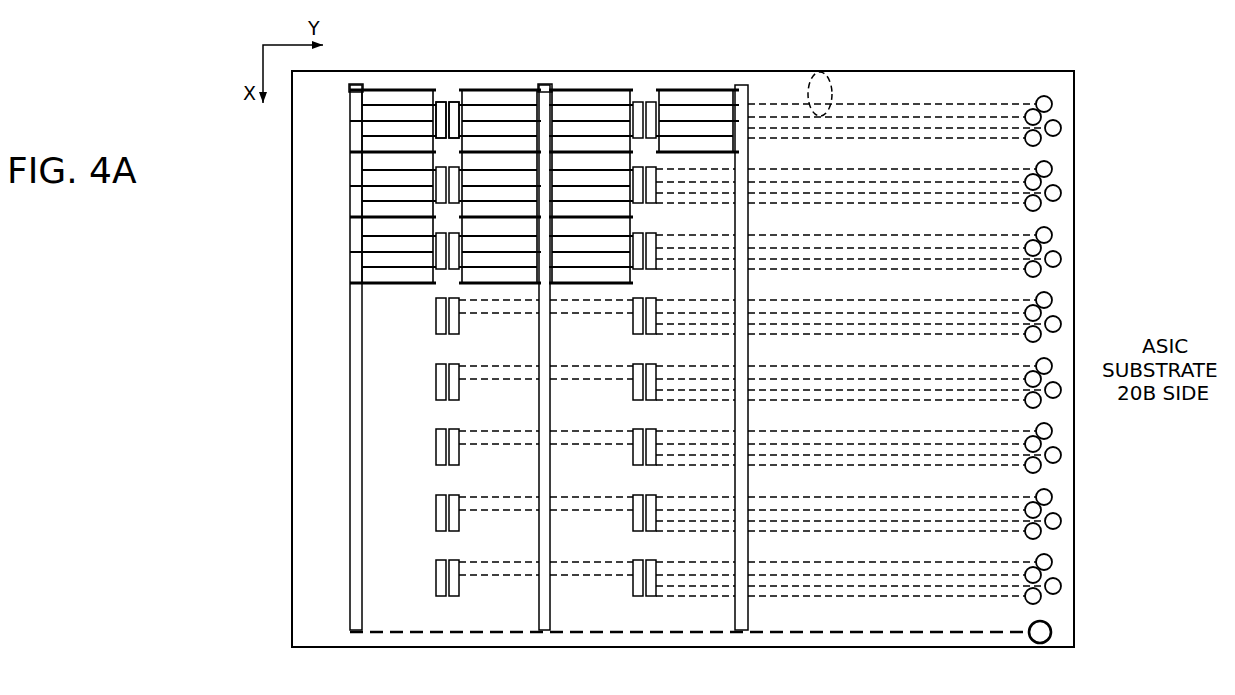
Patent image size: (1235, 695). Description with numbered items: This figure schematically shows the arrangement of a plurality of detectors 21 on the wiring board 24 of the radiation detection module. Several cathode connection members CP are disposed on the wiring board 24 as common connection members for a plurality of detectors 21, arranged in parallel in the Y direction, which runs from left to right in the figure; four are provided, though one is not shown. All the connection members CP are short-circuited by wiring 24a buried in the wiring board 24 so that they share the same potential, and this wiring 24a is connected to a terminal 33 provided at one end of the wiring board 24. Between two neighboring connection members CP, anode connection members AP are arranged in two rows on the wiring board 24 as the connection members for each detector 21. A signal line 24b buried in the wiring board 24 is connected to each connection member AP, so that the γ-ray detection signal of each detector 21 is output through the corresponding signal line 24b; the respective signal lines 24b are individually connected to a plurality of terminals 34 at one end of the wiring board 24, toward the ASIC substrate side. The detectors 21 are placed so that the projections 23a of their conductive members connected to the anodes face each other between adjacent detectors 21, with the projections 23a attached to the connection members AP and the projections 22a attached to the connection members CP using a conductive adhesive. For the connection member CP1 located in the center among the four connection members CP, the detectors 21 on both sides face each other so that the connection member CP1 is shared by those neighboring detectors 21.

The detector 21 is at (392, 84).
The projection 22a is at (356, 84).
The projection 23a is at (440, 101).
The wiring board 24 is at (1076, 120).
The wiring 24a is at (940, 637).
The signal line 24b is at (827, 75).
The terminal 33 is at (1051, 632).
The terminal 34 is at (1050, 100).
The anode connection member AP is at (454, 101).
The cathode connection member CP is at (350, 406).
The connection member CP1 is at (546, 631).